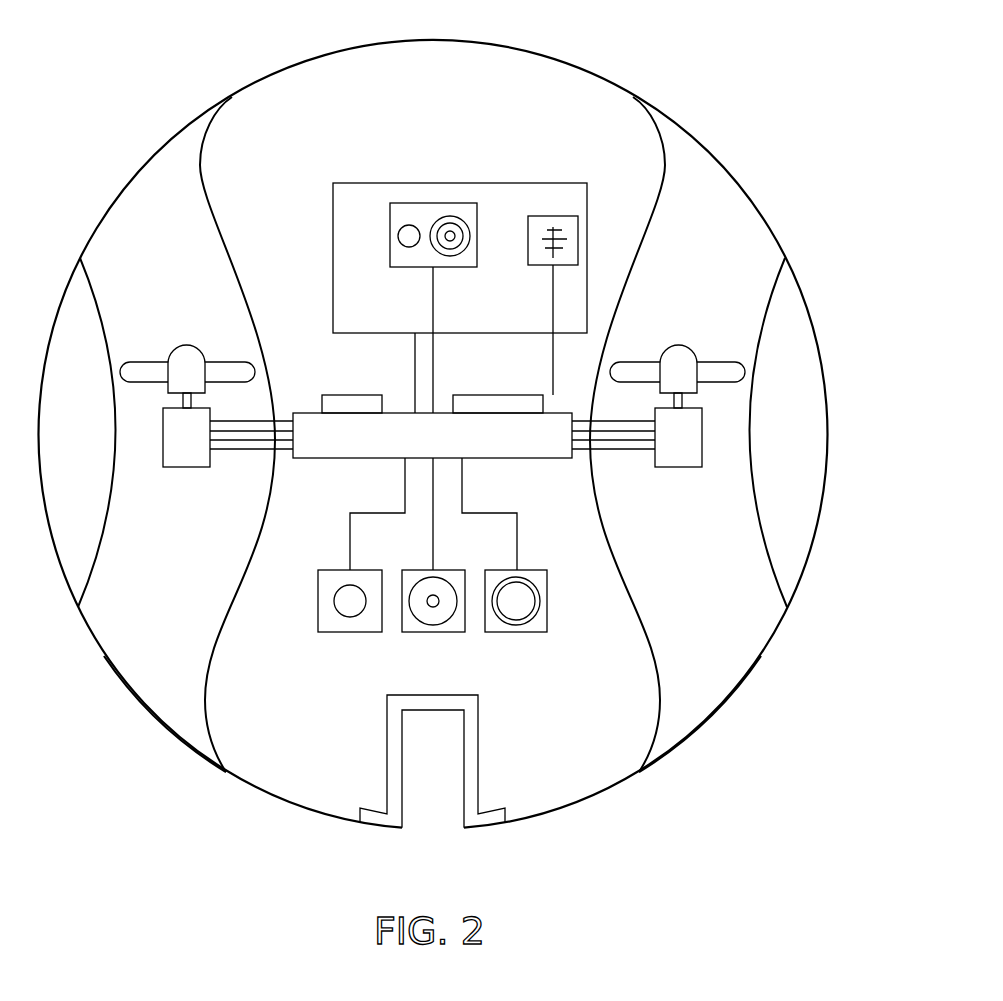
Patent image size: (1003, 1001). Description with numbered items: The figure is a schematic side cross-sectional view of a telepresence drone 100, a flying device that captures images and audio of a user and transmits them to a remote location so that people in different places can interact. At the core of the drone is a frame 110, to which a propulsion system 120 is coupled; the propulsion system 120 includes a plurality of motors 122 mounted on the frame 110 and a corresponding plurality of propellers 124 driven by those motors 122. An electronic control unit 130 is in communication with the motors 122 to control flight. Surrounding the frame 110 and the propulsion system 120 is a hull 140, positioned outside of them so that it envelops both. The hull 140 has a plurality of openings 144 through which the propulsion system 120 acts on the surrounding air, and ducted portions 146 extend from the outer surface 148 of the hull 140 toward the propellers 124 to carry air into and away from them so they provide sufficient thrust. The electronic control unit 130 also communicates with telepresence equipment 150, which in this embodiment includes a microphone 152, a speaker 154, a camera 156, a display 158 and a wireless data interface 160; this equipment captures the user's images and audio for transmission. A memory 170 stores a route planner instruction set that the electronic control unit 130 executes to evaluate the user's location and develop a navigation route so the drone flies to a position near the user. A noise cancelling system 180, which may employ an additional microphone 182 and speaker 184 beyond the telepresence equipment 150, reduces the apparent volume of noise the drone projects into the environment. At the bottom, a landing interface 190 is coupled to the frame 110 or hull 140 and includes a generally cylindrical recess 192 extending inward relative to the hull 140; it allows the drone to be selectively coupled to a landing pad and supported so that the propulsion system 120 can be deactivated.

The telepresence drone 100 is at (899, 143).
The frame 110 is at (328, 460).
The propulsion system 120 is at (432, 436).
The motors 122 is at (195, 469).
The propellers 124 is at (190, 344).
The electronic control unit 130 is at (393, 393).
The hull 140 is at (636, 88).
The openings 144 is at (122, 192).
The ducted portions 146 is at (141, 700).
The outer surface 148 is at (798, 283).
The telepresence equipment 150 is at (294, 774).
The microphone 152 is at (348, 636).
The speaker 154 is at (432, 636).
The camera 156 is at (515, 636).
The display 158 is at (466, 183).
The wireless data interface 160 is at (578, 222).
The memory 170 is at (497, 394).
The noise cancelling system 180 is at (383, 213).
The microphone 182 is at (398, 245).
The speaker 184 is at (462, 232).
The landing interface 190 is at (402, 798).
The cylindrical recess 192 is at (432, 780).